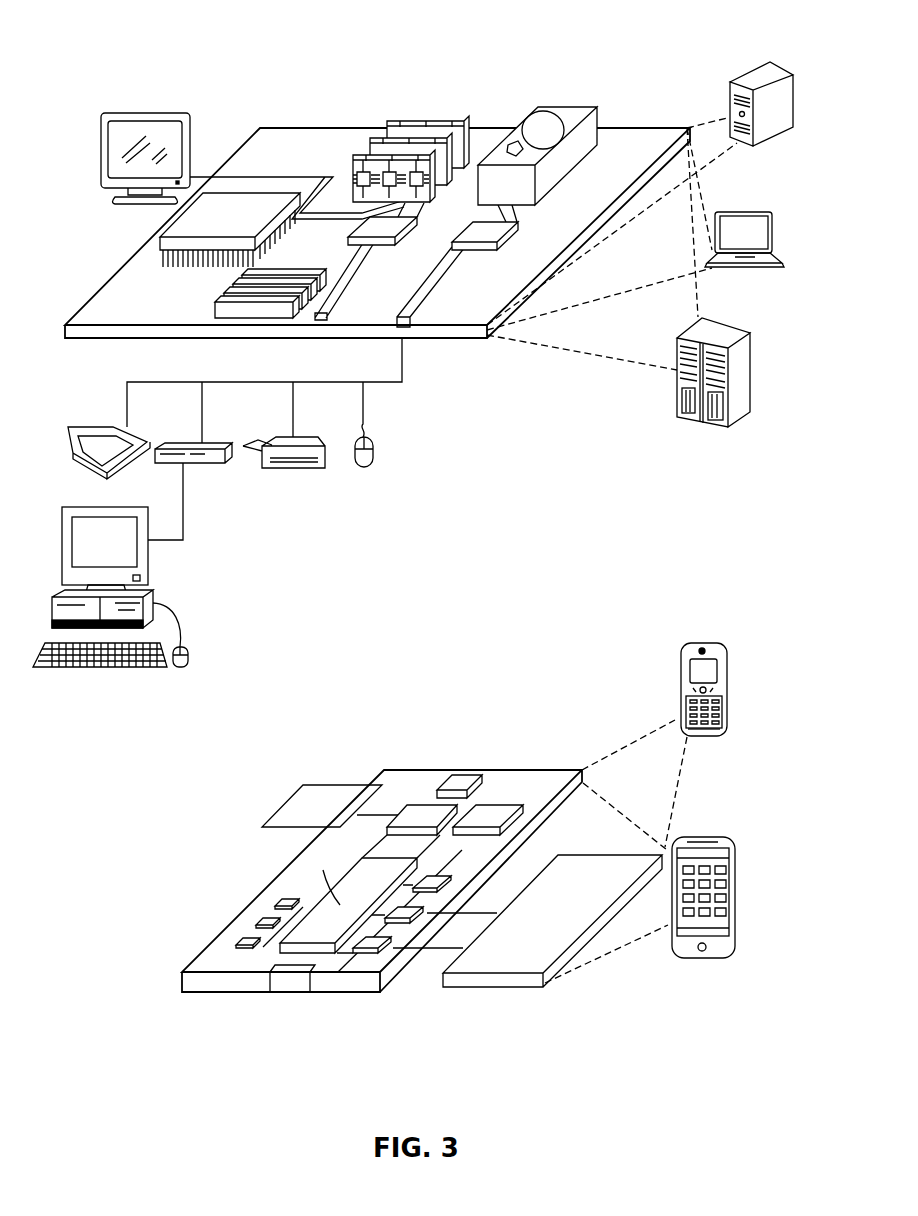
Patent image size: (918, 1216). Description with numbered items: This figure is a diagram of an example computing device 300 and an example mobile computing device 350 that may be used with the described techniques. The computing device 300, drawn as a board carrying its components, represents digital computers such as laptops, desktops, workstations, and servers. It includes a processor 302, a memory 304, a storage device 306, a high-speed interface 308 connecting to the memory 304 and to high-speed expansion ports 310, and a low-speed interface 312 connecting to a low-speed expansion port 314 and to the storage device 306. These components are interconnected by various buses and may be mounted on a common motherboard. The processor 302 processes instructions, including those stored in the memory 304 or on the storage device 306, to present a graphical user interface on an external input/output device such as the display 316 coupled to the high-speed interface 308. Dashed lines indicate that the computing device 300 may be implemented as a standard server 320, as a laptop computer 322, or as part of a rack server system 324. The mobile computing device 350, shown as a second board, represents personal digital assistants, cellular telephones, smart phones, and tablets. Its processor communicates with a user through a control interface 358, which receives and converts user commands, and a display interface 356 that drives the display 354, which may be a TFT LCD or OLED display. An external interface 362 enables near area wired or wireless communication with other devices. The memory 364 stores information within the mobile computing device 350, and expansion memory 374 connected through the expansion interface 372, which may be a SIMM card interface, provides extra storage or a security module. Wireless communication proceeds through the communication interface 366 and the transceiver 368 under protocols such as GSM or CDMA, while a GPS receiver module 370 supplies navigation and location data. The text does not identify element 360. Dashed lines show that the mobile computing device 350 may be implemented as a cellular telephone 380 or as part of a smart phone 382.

The computing device 300 is at (117, 41).
The processor 302 is at (186, 232).
The memory 304 is at (420, 122).
The storage device 306 is at (565, 112).
The high-speed interface 308 is at (363, 240).
The high-speed expansion ports 310 is at (215, 310).
The low-speed interface 312 is at (515, 223).
The low-speed expansion port 314 is at (410, 316).
The display 316 is at (160, 112).
The standard server 320 is at (772, 73).
The laptop computer 322 is at (745, 212).
The rack server system 324 is at (728, 338).
The mobile computing device 350 is at (183, 1006).
The display 354 is at (507, 963).
The display interface 356 is at (372, 946).
The control interface 358 is at (405, 916).
The chip 360 is at (437, 881).
The external interface 362 is at (288, 986).
The memory 364 is at (262, 918).
The communication interface 366 is at (427, 818).
The transceiver 368 is at (483, 818).
The GPS receiver module 370 is at (460, 783).
The expansion interface 372 is at (387, 769).
The expansion memory 374 is at (293, 803).
The cellular telephone 380 is at (713, 675).
The smart phone 382 is at (715, 884).